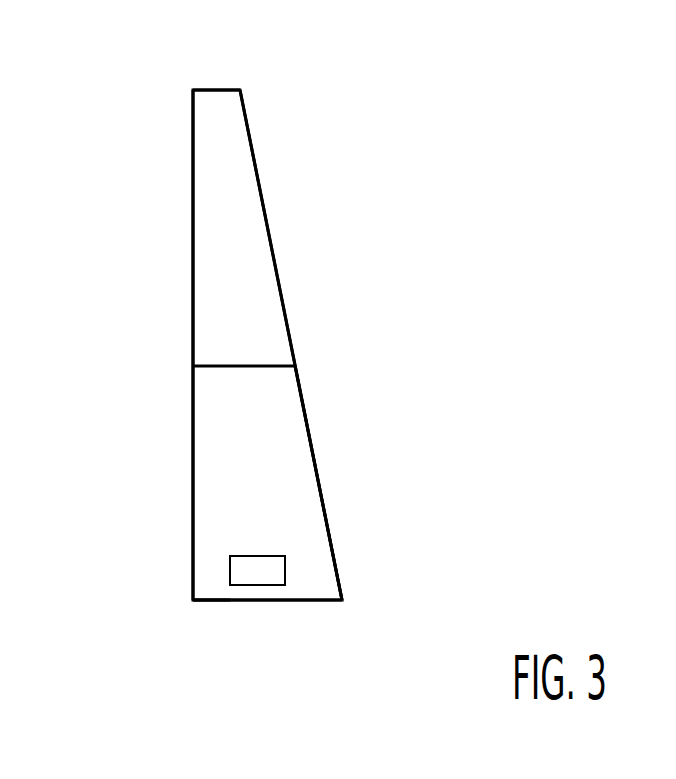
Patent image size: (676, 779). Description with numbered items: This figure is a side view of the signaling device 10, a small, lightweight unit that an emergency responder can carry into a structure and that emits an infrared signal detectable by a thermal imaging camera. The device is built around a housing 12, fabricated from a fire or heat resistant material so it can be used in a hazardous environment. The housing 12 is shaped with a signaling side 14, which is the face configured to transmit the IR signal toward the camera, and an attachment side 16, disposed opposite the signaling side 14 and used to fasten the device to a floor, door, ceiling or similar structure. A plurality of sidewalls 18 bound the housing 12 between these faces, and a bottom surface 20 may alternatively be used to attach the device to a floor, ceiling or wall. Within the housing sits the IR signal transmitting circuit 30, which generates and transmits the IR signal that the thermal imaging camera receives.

The signaling device 10 is at (160, 115).
The housing 12 is at (308, 385).
The signaling side 14 is at (168, 340).
The attachment side 16 is at (287, 307).
The sidewalls 18 is at (213, 90).
The bottom surface 20 is at (207, 600).
The IR signal transmitting circuit 30 is at (285, 572).